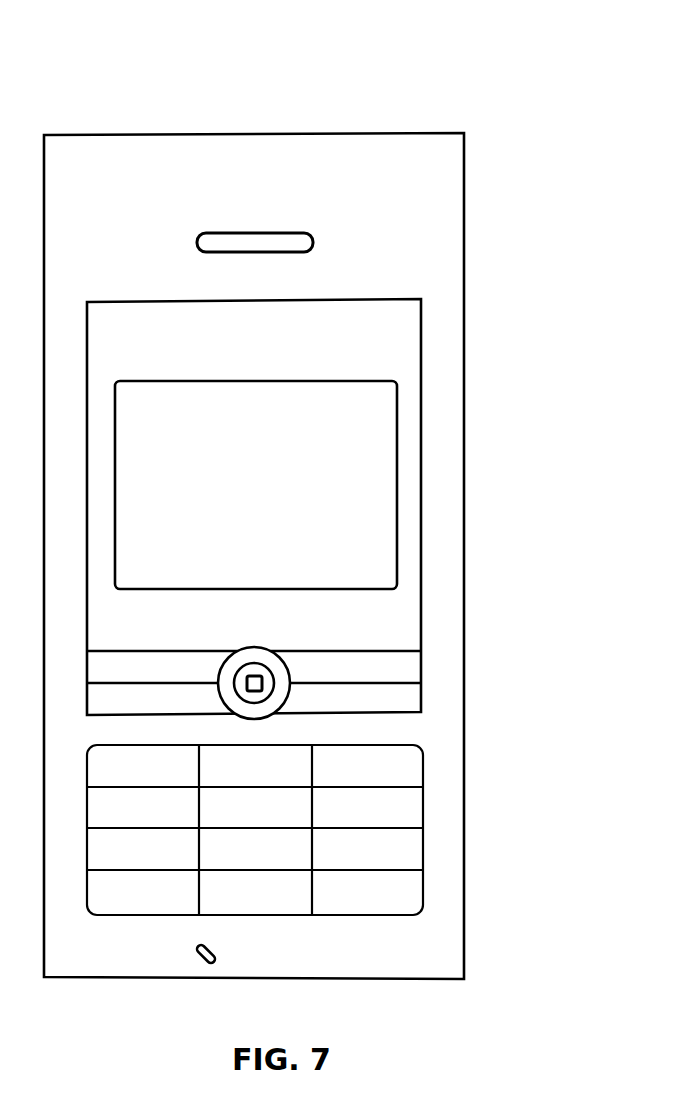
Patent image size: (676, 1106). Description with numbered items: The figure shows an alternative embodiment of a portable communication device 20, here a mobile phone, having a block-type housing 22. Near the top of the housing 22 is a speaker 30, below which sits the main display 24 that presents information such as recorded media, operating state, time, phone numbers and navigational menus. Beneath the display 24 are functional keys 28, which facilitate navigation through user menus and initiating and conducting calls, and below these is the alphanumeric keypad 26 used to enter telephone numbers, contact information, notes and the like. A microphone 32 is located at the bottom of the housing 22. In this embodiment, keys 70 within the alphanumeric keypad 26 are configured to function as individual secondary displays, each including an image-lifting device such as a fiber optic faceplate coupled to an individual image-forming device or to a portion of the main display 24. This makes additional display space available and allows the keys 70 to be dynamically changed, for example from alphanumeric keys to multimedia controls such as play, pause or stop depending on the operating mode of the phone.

The portable communication device 20 is at (308, 508).
The housing 22 is at (445, 217).
The display 24 is at (268, 511).
The alphanumeric keypad 26 is at (323, 830).
The functional keys 28 is at (446, 665).
The speaker 30 is at (238, 232).
The microphone 32 is at (220, 955).
The keys 70 is at (157, 779).